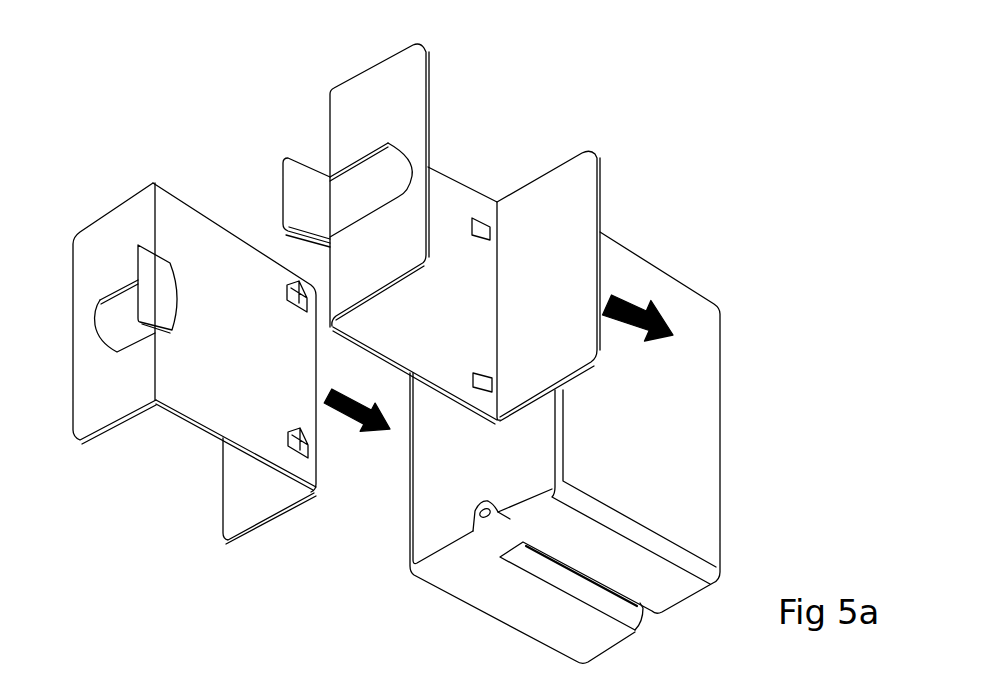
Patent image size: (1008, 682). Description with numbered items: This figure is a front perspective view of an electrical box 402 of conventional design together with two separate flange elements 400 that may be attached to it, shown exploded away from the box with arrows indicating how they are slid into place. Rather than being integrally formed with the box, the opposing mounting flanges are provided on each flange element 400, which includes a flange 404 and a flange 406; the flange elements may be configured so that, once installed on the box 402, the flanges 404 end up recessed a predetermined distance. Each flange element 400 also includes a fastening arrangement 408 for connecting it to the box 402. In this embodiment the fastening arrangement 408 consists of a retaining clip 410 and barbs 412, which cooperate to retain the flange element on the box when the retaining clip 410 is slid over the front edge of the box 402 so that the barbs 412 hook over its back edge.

The flange element 400 is at (104, 222).
The electrical box 402 is at (463, 578).
The flange 404 is at (409, 113).
The flange 406 is at (572, 170).
The fastening arrangement 408 is at (208, 112).
The retaining clip 410 is at (305, 180).
The barbs 412 is at (474, 215).